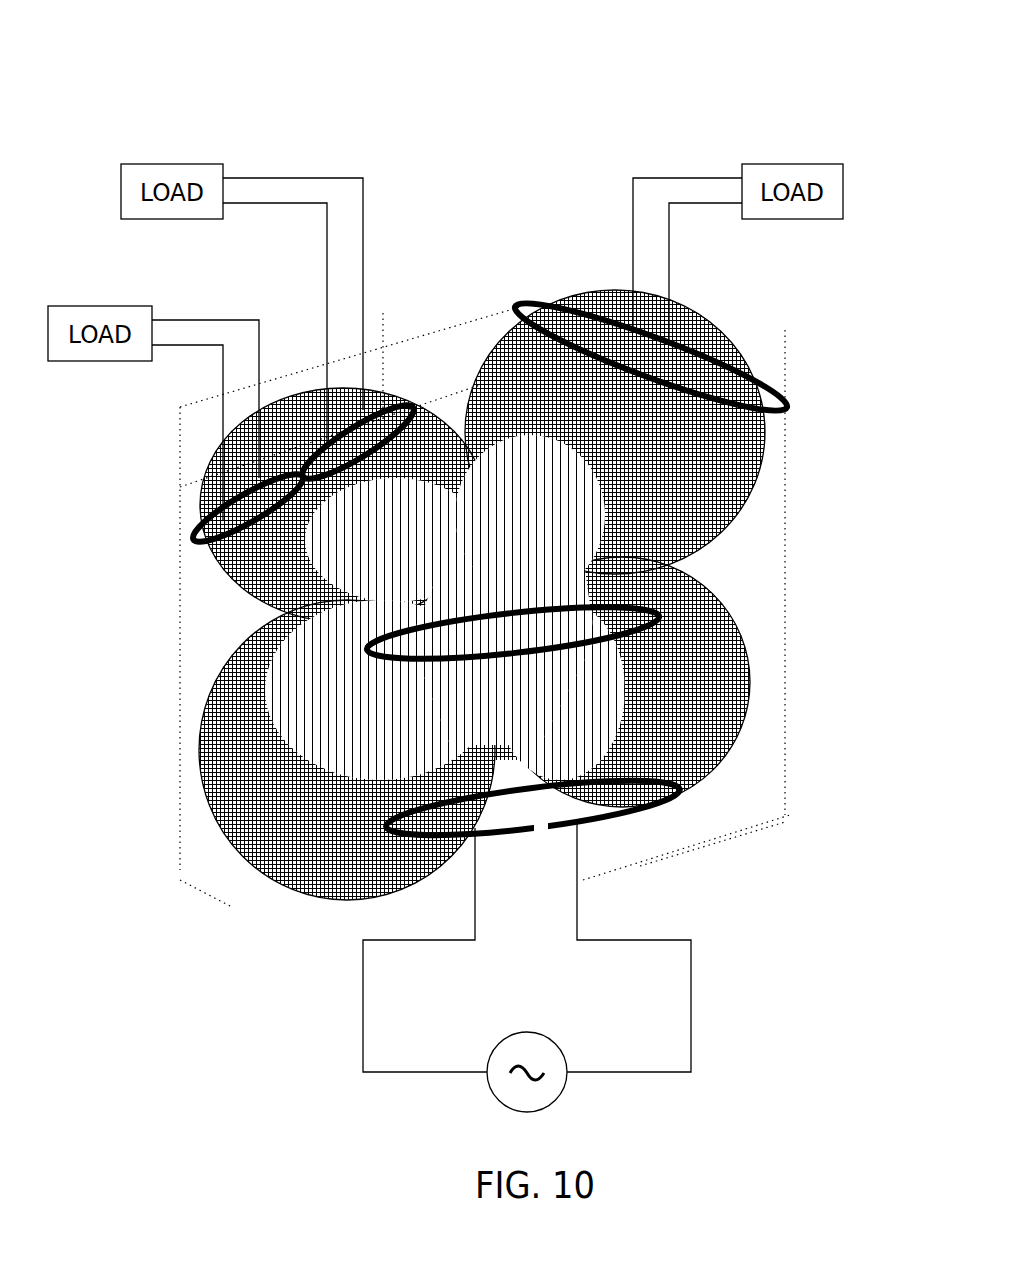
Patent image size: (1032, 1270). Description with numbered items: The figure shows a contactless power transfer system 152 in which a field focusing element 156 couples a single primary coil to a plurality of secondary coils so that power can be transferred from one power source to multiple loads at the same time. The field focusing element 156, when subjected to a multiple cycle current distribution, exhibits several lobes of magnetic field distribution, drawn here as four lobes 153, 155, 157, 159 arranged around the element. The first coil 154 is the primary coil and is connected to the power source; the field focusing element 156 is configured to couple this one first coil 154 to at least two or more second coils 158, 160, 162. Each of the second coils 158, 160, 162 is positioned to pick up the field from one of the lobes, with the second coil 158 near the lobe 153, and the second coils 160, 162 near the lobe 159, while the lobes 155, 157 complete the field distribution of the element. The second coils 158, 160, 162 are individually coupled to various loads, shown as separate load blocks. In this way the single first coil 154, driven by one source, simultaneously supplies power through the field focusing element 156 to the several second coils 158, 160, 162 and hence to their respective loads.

The contactless power transfer system 152 is at (795, 66).
The lobe of magnetic field distribution 153 is at (707, 330).
The first coil 154 is at (648, 812).
The lobe of magnetic field distribution 155 is at (730, 762).
The field focusing element 156 is at (655, 612).
The lobe of magnetic field distribution 157 is at (262, 880).
The second coil 158 is at (763, 383).
The lobe of magnetic field distribution 159 is at (206, 468).
The second coil 160 is at (415, 405).
The second coil 162 is at (200, 527).